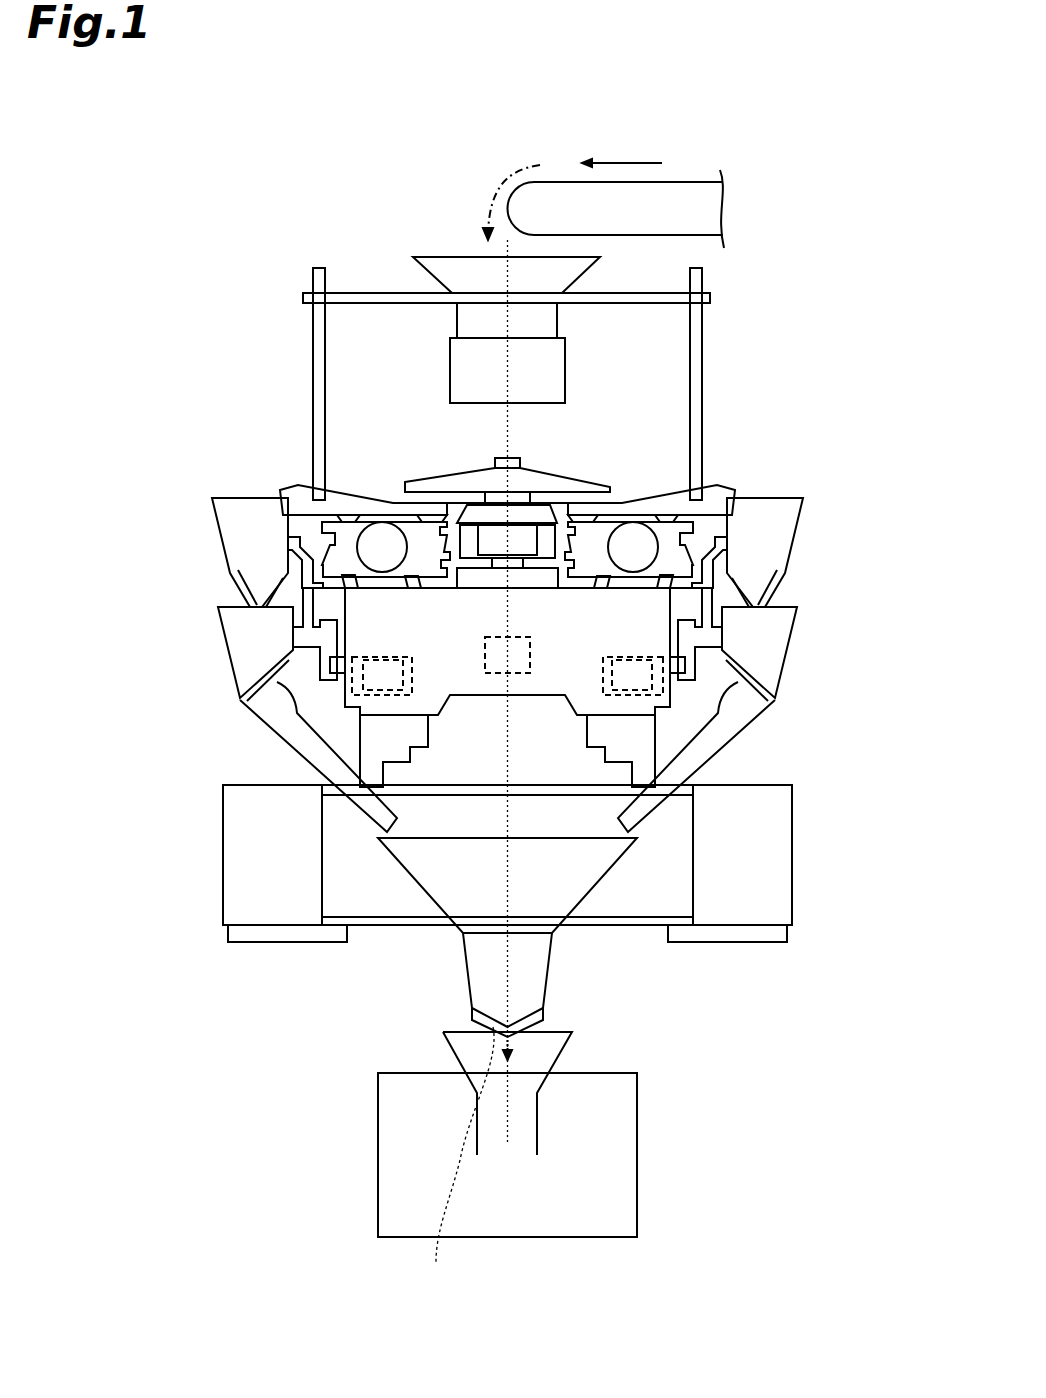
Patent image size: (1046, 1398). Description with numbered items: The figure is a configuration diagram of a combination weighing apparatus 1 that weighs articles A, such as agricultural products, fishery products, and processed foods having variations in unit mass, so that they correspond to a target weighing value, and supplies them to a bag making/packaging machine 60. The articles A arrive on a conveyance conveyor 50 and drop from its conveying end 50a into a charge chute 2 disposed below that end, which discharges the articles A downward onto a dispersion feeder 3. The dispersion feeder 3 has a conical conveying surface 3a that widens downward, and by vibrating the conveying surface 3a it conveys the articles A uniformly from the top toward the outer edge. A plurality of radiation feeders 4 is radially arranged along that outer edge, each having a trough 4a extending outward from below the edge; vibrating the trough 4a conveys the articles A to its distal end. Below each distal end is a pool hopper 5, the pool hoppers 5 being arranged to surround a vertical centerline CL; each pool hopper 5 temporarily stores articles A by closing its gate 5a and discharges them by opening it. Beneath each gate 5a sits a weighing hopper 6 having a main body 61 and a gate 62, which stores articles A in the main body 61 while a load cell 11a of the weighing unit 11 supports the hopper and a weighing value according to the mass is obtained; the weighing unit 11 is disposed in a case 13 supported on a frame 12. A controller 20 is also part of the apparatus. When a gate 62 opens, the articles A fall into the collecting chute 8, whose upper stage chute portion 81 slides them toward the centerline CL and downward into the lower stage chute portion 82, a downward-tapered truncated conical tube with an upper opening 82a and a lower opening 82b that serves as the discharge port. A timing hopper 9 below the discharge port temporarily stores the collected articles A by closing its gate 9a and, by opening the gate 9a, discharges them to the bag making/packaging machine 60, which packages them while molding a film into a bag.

The combination weighing apparatus 1 is at (250, 160).
The charge chute 2 is at (450, 265).
The dispersion feeder 3 is at (555, 480).
The conveying surface 3a is at (440, 478).
The radiation feeder 4 is at (295, 488).
The trough 4a is at (338, 490).
The pool hopper 5 is at (222, 520).
The gate 5a is at (228, 595).
The weighing hopper 6 is at (508, 654).
The main body 61 is at (240, 645).
The gate 62 is at (255, 690).
The collecting chute 8 is at (507, 859).
The upper stage chute portion 81 is at (290, 750).
The lower stage chute portion 82 is at (524, 922).
The upper opening 82a is at (478, 838).
The lower opening 82b is at (490, 933).
The timing hopper 9 is at (532, 980).
The gate 9a is at (457, 1161).
The weighing unit 11 is at (507, 662).
The load cell 11a is at (412, 655).
The frame 12 is at (780, 835).
The case 13 is at (522, 685).
The controller 20 is at (500, 677).
The conveyance conveyor 50 is at (683, 192).
The conveying end 50a is at (522, 205).
The bag making/packaging machine 60 is at (622, 1138).
The articles A is at (500, 180).
The centerline CL is at (508, 870).